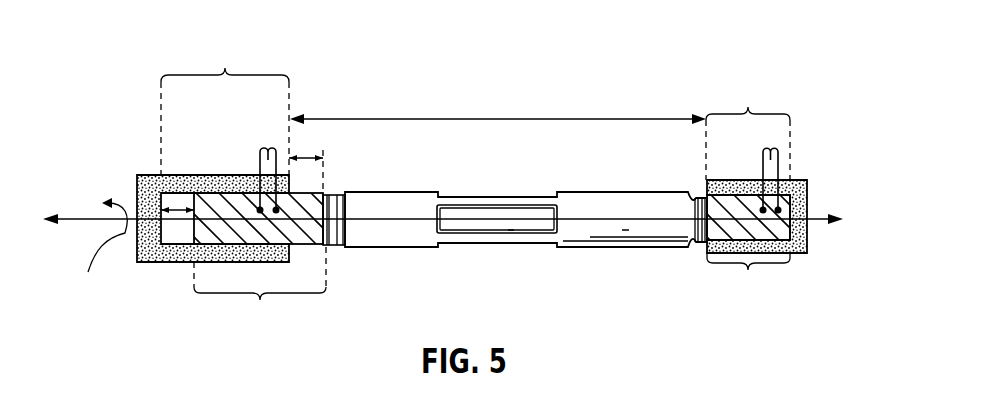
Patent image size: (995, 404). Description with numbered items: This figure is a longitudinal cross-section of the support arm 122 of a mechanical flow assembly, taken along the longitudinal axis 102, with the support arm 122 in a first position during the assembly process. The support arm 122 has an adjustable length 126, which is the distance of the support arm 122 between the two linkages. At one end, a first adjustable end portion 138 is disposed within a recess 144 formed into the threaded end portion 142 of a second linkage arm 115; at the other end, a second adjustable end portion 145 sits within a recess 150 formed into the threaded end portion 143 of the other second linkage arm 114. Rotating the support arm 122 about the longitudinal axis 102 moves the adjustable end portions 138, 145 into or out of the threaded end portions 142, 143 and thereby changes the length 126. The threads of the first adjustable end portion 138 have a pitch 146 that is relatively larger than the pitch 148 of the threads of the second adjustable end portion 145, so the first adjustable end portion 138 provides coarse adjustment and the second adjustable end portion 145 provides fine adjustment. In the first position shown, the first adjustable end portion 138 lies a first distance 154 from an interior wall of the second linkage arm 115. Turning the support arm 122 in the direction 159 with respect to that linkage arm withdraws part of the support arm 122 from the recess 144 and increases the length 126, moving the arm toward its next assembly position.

The longitudinal axis 102 is at (83, 218).
The second linkage arm 114 is at (834, 94).
The second linkage arm 115 is at (194, 175).
The support arm 122 is at (585, 190).
The length 126 is at (497, 118).
The first adjustable end portion 138 is at (256, 242).
The threaded end portion 142 is at (143, 262).
The threaded end portion 143 is at (800, 205).
The recess 144 is at (225, 106).
The second adjustable end portion 145 is at (745, 249).
The pitch 146 is at (267, 148).
The pitch 148 is at (772, 150).
The recess 150 is at (748, 129).
The first distance 154 is at (173, 208).
The direction 159 is at (99, 251).